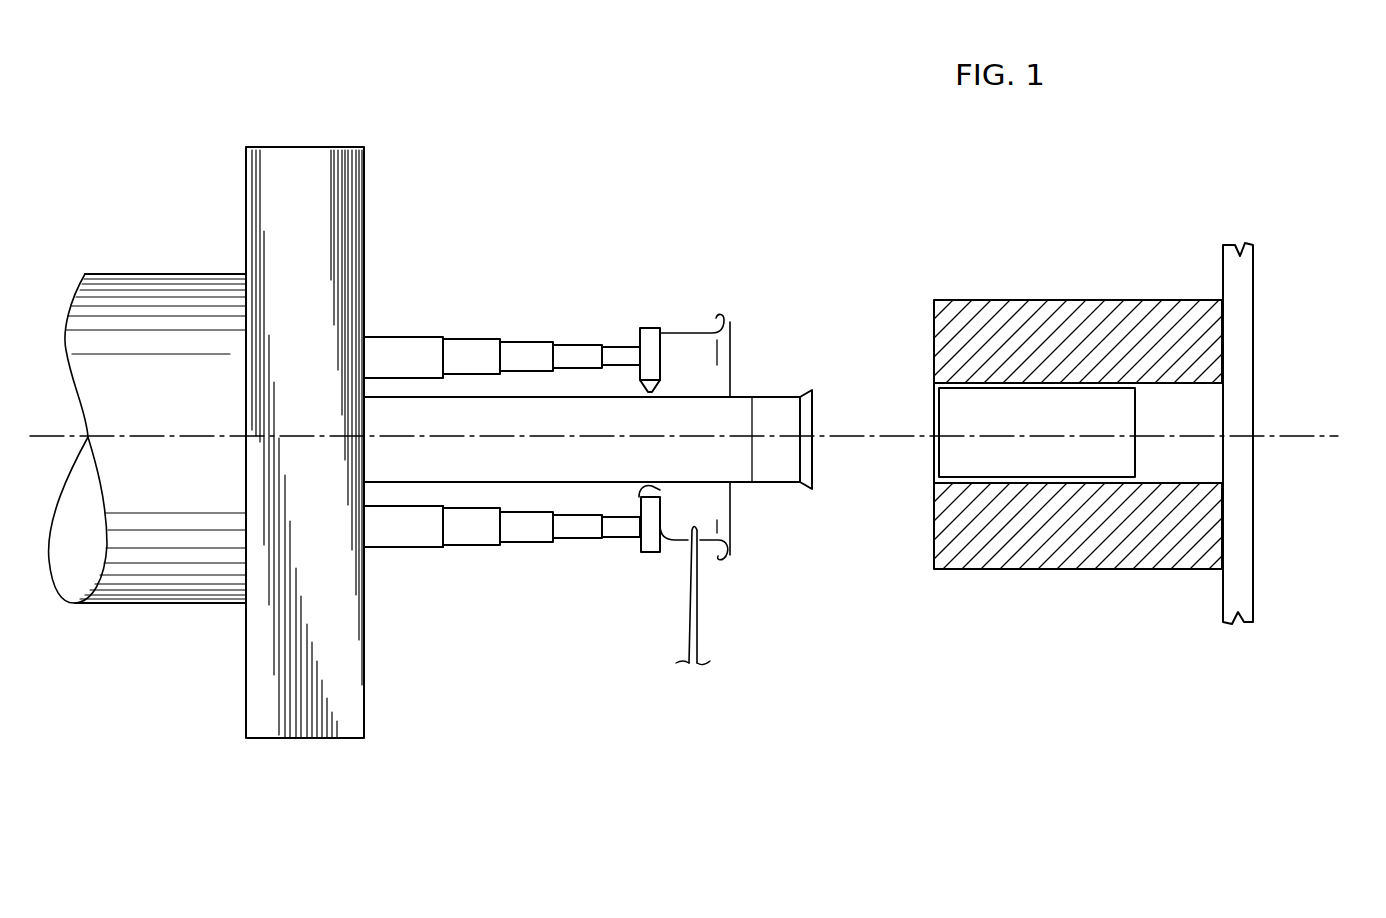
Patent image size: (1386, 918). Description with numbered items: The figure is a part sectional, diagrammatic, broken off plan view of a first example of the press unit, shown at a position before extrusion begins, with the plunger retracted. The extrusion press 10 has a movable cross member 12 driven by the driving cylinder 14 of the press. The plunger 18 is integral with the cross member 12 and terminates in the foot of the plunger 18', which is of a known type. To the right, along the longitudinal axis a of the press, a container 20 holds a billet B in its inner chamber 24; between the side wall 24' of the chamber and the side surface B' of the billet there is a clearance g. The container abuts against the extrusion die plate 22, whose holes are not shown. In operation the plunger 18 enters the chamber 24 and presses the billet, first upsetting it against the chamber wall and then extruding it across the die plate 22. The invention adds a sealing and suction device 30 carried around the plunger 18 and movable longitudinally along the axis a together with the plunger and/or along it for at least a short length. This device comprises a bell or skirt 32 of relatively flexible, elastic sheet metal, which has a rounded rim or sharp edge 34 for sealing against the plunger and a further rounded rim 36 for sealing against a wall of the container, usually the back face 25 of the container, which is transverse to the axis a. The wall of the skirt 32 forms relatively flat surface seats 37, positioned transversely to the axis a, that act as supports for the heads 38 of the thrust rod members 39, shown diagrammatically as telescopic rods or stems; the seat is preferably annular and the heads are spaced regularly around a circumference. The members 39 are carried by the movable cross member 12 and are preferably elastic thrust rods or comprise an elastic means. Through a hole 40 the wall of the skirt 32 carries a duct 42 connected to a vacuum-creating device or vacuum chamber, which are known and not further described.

The extrusion press 10 is at (611, 92).
The movable cross member 12 is at (301, 165).
The driving cylinder 14 is at (165, 415).
The plunger 18 is at (582, 439).
The foot of the plunger 18' is at (791, 409).
The container 20 is at (1145, 318).
The extrusion die plate 22 is at (1237, 557).
The inner chamber 24 is at (1131, 435).
The side wall of the chamber 24' is at (1233, 395).
The back face of the container 25 is at (930, 519).
The sealing and suction device 30 is at (608, 559).
The bell or skirt 32 is at (716, 512).
The sharp edge 34 is at (645, 393).
The rounded rim 36 is at (716, 316).
The surface seat 37 is at (648, 328).
The heads 38 is at (652, 552).
The thrust rod members 39 is at (494, 328).
The hole 40 is at (700, 542).
The duct 42 is at (686, 622).
The billet B is at (1089, 455).
The side surface of the billet B' is at (1048, 310).
The clearance g is at (1017, 348).
The longitudinal axis a is at (1354, 432).